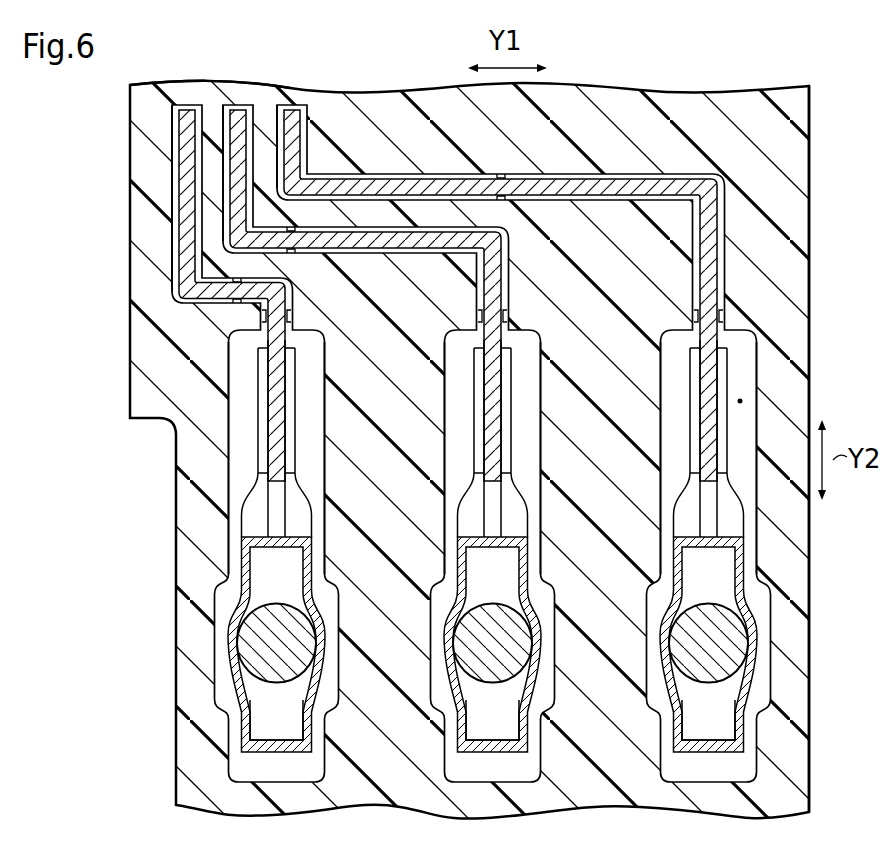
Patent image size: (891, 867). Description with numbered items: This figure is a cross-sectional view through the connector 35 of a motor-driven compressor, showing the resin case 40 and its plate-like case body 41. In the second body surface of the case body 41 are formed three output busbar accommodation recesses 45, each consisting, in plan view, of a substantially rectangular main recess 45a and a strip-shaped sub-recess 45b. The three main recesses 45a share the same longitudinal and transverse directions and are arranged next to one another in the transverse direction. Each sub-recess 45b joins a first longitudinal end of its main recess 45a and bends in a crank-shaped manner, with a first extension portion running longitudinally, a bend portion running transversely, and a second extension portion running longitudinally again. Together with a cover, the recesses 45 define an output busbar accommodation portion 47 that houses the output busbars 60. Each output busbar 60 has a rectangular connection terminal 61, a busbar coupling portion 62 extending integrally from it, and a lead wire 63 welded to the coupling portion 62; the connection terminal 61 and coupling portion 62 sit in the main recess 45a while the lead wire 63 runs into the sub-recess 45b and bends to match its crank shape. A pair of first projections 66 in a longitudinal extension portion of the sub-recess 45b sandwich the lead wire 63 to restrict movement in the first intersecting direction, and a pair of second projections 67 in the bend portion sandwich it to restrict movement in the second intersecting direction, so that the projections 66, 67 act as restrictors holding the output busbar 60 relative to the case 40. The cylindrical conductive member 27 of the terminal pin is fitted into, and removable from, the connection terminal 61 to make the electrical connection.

The conductive member 27 is at (248, 633).
The connector 35 is at (139, 82).
The case 40 is at (744, 100).
The case body 41 is at (811, 231).
The output busbar accommodation recess 45 is at (237, 766).
The main recess 45a is at (228, 483).
The sub-recess 45b is at (172, 292).
The output busbar accommodation portion 47 is at (741, 401).
The output busbar 60 is at (247, 732).
The connection terminal 61 is at (238, 697).
The busbar coupling portion 62 is at (266, 372).
The lead wire 63 is at (188, 194).
The first projection 66 is at (198, 216).
The second projection 67 is at (239, 284).